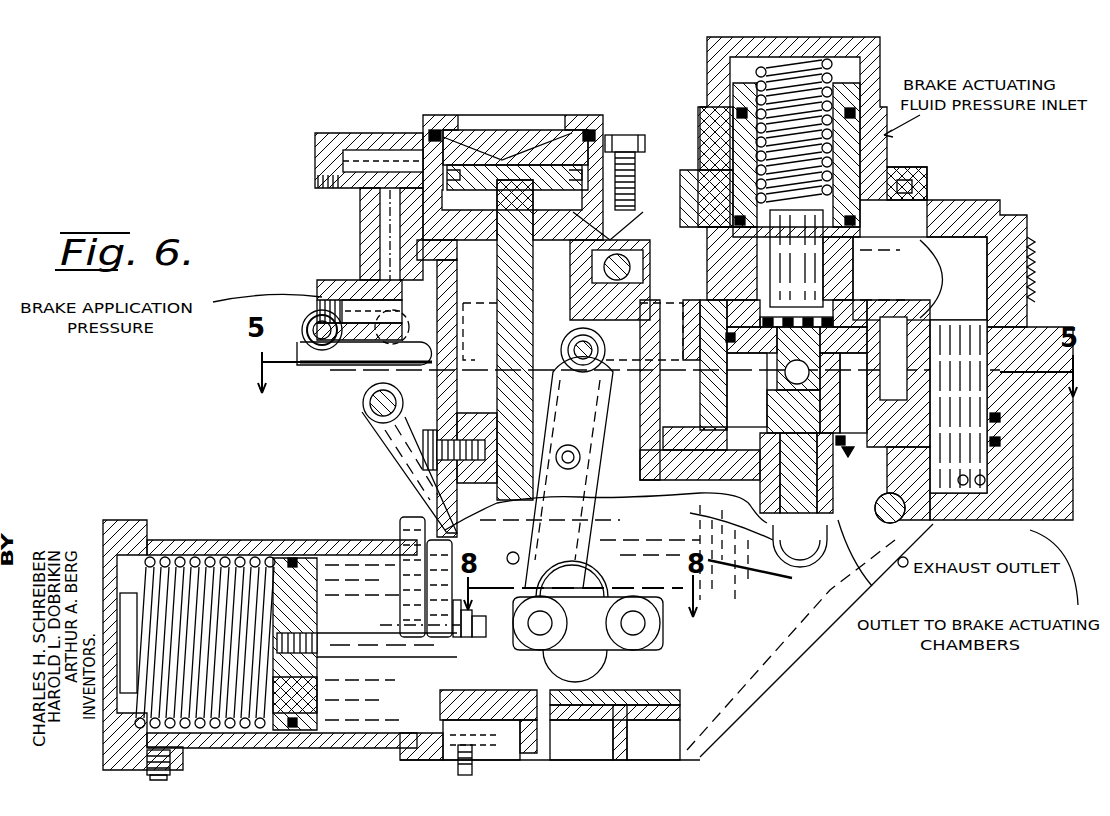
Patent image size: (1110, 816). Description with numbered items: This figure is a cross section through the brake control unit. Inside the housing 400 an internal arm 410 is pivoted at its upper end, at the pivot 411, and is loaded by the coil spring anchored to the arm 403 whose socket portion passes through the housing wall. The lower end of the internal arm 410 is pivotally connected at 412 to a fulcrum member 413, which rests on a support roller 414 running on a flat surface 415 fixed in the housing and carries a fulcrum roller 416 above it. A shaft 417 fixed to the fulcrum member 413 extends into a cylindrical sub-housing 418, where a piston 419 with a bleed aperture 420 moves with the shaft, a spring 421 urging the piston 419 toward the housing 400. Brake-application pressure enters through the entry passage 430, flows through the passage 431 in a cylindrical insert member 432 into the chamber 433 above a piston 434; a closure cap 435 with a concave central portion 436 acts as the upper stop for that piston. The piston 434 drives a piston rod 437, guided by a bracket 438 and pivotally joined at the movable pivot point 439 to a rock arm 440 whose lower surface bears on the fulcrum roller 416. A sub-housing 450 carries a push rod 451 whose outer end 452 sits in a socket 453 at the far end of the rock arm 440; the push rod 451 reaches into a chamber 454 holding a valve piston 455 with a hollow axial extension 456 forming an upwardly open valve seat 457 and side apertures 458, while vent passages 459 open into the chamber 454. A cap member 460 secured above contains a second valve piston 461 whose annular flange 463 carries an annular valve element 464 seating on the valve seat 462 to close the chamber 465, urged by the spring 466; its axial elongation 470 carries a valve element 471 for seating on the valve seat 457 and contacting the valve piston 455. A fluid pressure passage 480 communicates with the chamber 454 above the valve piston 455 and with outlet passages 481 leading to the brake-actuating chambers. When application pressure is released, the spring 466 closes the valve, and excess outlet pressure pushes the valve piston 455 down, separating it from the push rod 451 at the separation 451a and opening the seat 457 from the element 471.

The housing 400 is at (634, 245).
The arm 403 is at (337, 366).
The internal arm 410 is at (582, 470).
The pivot 411 is at (590, 345).
The pivotal connection 412 is at (538, 626).
The fulcrum member 413 is at (630, 650).
The support roller 414 is at (650, 690).
The flat surface 415 is at (682, 705).
The fulcrum roller 416 is at (598, 570).
The shaft 417 is at (396, 660).
The sub-housing 418 is at (280, 748).
The piston 419 is at (318, 608).
The bleed aperture 420 is at (325, 688).
The spring 421 is at (222, 558).
The fluid pressure entry passage 430 is at (363, 247).
The passage 431 is at (360, 158).
The cylindrical insert member 432 is at (626, 150).
The chamber 433 is at (458, 153).
The piston 434 is at (566, 167).
The closure cap 435 is at (588, 130).
The concave central portion 436 is at (540, 128).
The piston rod 437 is at (516, 180).
The bracket 438 is at (457, 523).
The pivot point 439 is at (497, 550).
The rock arm 440 is at (750, 572).
The sub-housing 450 is at (645, 225).
The push rod 451 is at (742, 500).
The separation 451a is at (822, 412).
The outer end 452 is at (866, 583).
The socket 453 is at (790, 567).
The chamber 454 is at (722, 392).
The valve piston 455 is at (857, 318).
The axial extension 456 is at (757, 392).
The valve seat 457 is at (790, 336).
The apertures 458 is at (823, 383).
The vent passages 459 is at (722, 412).
The cap member 460 is at (882, 78).
The second valve piston 461 is at (848, 153).
The valve seat 462 is at (857, 218).
The annular flange 463 is at (912, 175).
The annular valve element 464 is at (712, 180).
The chamber 465 is at (722, 143).
The spring 466 is at (812, 62).
The axial elongation 470 is at (845, 262).
The valve element 471 is at (780, 240).
The fluid pressure passage 480 is at (965, 352).
The outlet passages 481 is at (980, 486).